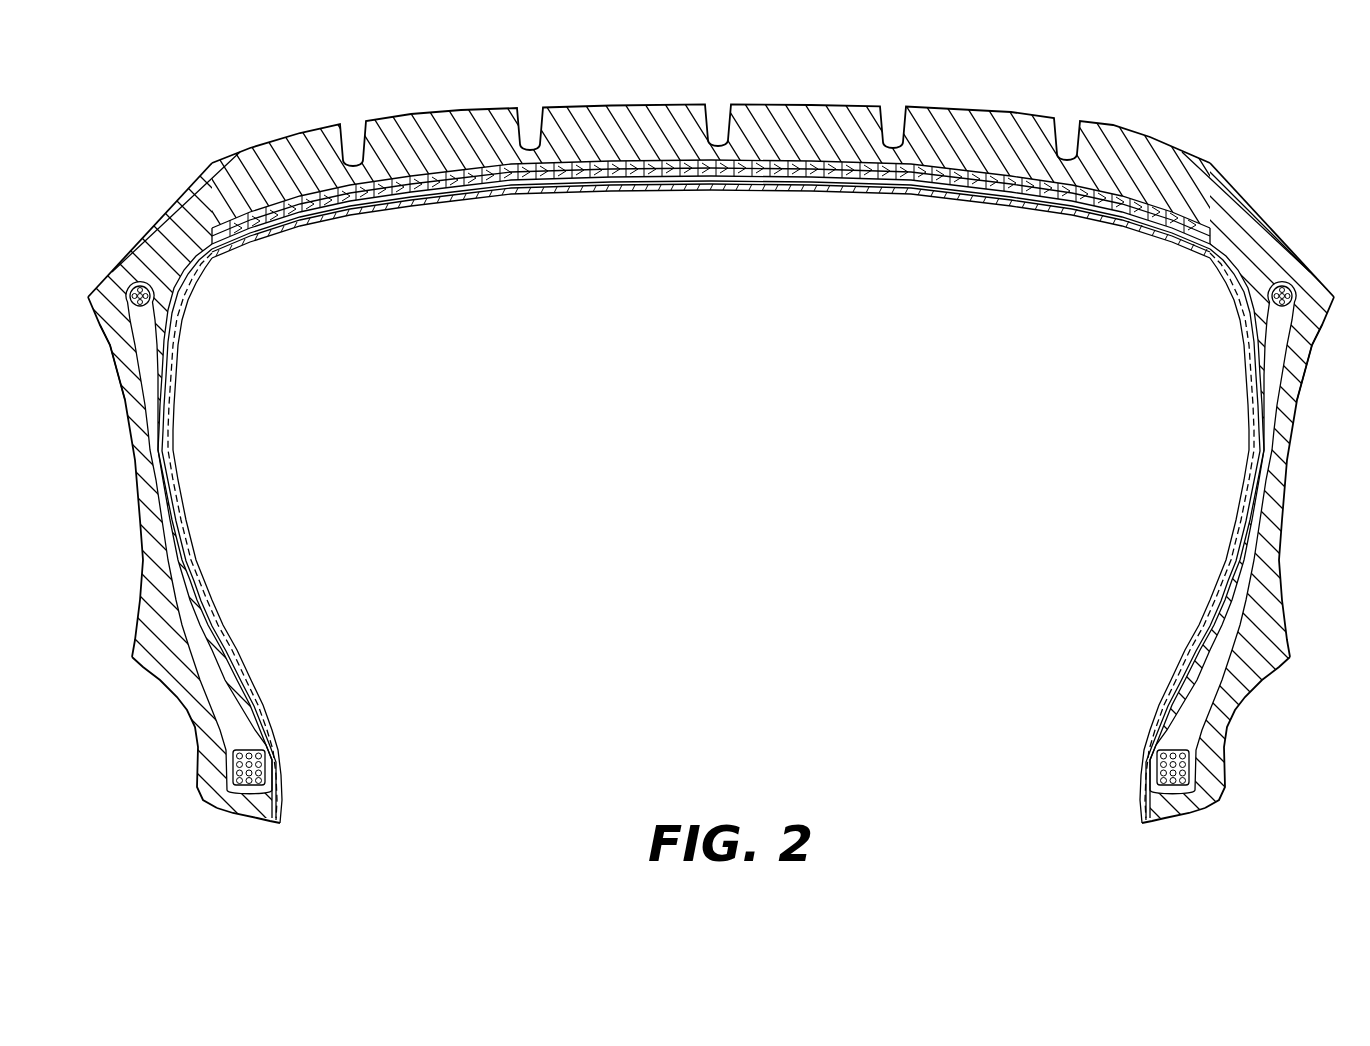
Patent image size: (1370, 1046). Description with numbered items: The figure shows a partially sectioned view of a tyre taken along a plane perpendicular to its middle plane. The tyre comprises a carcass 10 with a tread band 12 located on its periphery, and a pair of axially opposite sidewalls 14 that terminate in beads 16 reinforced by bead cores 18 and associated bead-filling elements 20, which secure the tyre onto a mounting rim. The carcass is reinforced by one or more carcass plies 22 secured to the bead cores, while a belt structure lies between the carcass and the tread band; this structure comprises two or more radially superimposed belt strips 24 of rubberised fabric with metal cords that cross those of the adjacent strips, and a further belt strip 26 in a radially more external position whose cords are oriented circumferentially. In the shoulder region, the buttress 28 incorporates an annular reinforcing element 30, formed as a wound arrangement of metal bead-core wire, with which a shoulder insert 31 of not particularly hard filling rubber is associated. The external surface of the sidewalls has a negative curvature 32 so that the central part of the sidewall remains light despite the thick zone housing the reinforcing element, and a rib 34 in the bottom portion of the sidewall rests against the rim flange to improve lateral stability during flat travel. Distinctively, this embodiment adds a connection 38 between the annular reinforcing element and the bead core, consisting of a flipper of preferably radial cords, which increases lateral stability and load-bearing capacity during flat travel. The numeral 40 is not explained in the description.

The carcass 10 is at (759, 191).
The tread band 12 is at (816, 112).
The sidewalls 14 is at (142, 437).
The beads 16 is at (197, 767).
The bead cores 18 is at (268, 762).
The bead-filling elements 20 is at (240, 712).
The carcass plies 22 is at (912, 195).
The belt strips 24 is at (448, 193).
The further belt strip 26 is at (940, 150).
The buttress 28 is at (105, 312).
The annular reinforcing element 30 is at (112, 271).
The shoulder insert 31 is at (195, 292).
The negative curvature of the external surface of the sidewalls 32 is at (138, 493).
The rib 34 is at (257, 823).
The connection 38 is at (160, 383).
The apex filler 40 is at (112, 362).